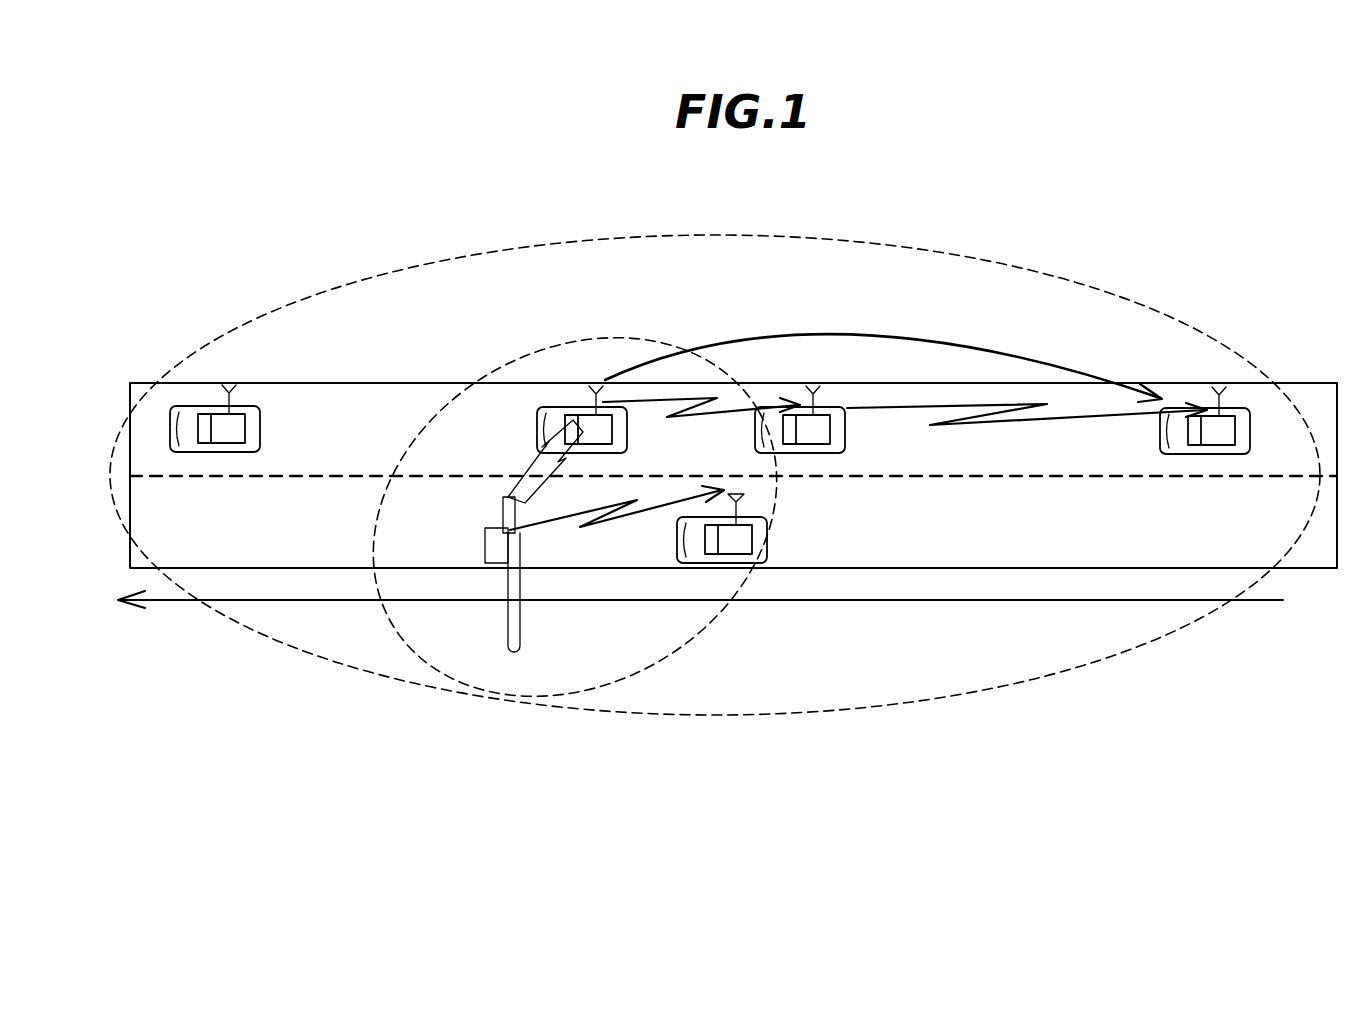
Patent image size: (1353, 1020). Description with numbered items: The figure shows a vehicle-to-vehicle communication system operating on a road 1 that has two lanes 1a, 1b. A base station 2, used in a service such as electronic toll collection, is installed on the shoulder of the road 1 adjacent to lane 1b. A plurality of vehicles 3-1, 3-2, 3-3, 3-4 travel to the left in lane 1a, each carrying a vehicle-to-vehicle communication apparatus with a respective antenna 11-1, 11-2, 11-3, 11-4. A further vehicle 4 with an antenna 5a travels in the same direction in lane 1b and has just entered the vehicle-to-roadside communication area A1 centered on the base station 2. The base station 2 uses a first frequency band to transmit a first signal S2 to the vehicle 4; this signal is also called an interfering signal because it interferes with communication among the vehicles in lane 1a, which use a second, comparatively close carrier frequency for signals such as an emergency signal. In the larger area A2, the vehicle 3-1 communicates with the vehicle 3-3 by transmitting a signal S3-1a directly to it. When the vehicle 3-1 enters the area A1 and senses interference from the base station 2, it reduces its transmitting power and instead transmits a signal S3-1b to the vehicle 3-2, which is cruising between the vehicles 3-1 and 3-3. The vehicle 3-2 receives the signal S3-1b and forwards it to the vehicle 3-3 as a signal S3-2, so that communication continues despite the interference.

The road 1 is at (1240, 386).
The lane 1a is at (1310, 398).
The lane 1b is at (1310, 562).
The base station 2 is at (485, 546).
The vehicle 3-1 is at (627, 439).
The vehicle 3-2 is at (845, 439).
The vehicle 3-3 is at (1228, 454).
The vehicle 3-4 is at (260, 429).
The vehicle 4 is at (767, 543).
The antenna 5a is at (745, 497).
The antenna 11-1 is at (589, 389).
The antenna 11-2 is at (820, 391).
The antenna 11-3 is at (1212, 390).
The antenna 11-4 is at (236, 390).
The vehicle-to-roadside communication area A1 is at (448, 655).
The area A2 is at (878, 250).
The first signal S2 is at (642, 514).
The signal S3-1a is at (884, 332).
The signal S3-1b is at (740, 406).
The signal S3-2 is at (1008, 410).